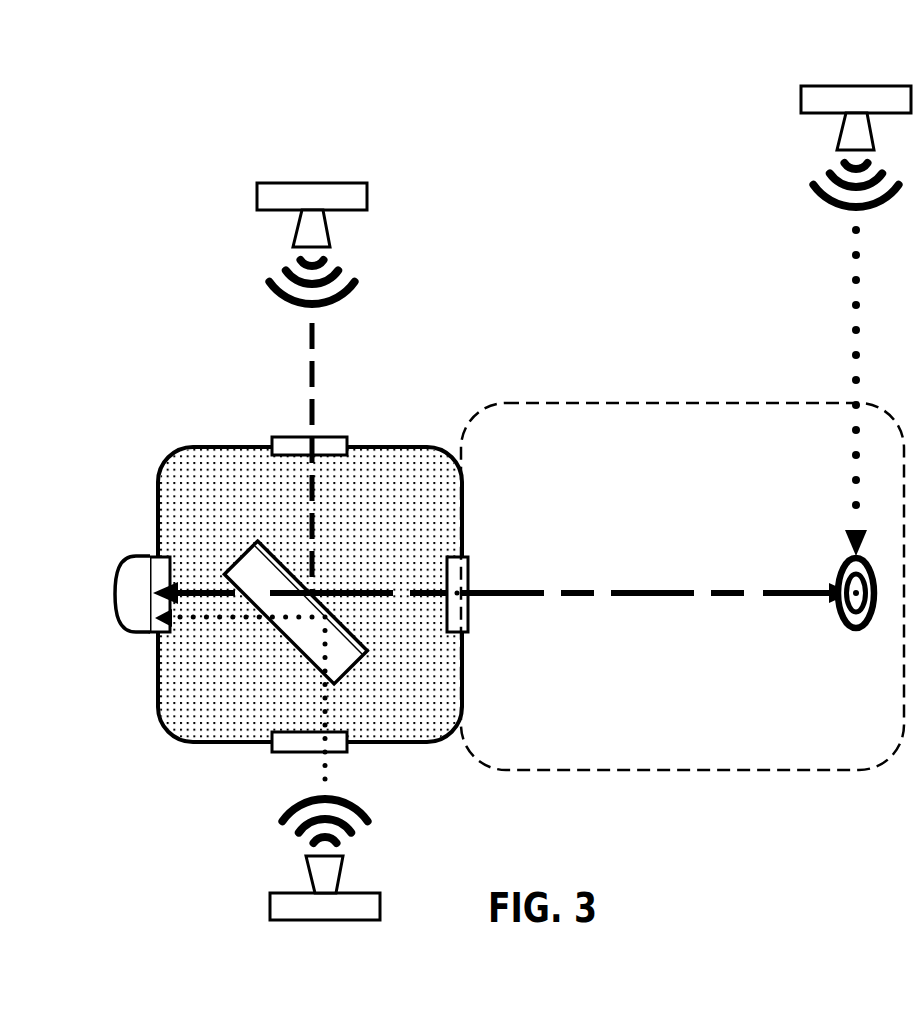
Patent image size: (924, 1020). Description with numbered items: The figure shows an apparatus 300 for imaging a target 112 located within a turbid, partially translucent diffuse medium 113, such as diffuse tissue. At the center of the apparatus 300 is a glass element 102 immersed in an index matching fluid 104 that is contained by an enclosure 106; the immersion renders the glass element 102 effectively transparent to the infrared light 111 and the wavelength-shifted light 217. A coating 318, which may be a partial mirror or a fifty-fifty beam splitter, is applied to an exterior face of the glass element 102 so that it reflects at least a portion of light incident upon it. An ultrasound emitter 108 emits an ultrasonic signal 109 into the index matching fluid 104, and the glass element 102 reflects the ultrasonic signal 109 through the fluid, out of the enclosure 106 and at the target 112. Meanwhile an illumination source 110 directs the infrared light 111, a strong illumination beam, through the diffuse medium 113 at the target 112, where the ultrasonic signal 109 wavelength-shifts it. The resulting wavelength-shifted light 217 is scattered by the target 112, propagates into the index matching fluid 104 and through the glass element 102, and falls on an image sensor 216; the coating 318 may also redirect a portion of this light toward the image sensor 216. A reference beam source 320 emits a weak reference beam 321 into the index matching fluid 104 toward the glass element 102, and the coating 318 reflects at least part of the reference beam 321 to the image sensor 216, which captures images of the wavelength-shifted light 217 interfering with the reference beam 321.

The apparatus 300 is at (150, 32).
The glass element 102 is at (295, 650).
The index matching fluid 104 is at (177, 715).
The enclosure 106 is at (228, 745).
The ultrasound emitter 108 is at (257, 185).
The ultrasonic signal 109 is at (312, 340).
The illumination source 110 is at (800, 88).
The infrared light 111 is at (856, 258).
The target 112 is at (851, 633).
The diffuse medium 113 is at (531, 774).
The image sensor 216 is at (127, 630).
The wavelength-shifted light 217 is at (236, 603).
The coating 318 is at (262, 540).
The reference beam source 320 is at (270, 903).
The reference beam 321 is at (328, 770).